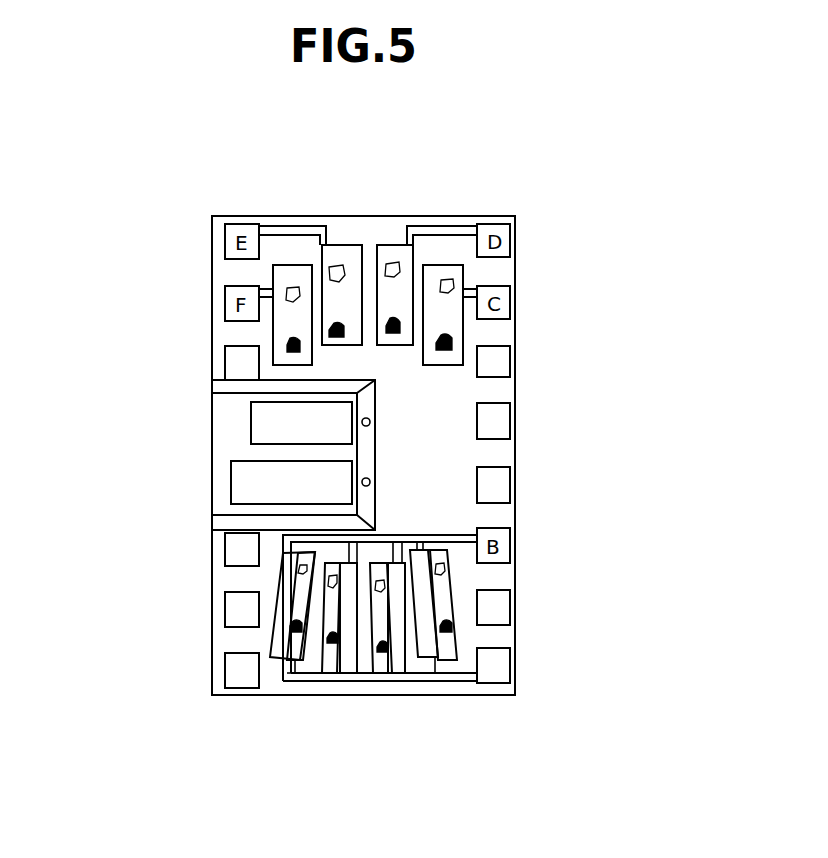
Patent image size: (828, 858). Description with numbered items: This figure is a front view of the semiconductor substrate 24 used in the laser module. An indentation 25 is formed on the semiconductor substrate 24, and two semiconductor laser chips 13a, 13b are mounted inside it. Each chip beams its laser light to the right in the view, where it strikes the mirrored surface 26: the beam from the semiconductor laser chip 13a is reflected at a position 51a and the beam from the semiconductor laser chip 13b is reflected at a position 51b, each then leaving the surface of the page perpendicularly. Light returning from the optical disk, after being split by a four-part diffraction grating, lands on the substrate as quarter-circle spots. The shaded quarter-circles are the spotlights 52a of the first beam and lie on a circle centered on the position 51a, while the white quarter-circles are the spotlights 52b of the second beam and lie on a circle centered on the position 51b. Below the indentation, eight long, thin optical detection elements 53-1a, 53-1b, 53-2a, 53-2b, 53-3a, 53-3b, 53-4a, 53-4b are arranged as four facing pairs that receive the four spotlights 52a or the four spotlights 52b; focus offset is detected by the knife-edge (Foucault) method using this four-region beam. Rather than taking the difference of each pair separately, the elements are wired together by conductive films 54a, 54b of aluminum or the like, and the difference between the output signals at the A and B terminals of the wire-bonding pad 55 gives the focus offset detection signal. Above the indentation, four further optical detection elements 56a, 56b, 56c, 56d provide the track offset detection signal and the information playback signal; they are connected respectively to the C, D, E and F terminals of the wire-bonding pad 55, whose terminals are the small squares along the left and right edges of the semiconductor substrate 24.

The semiconductor substrate 24 is at (212, 287).
The semiconductor laser chip 13a is at (232, 485).
The semiconductor laser chip 13b is at (251, 423).
The indentation 25 is at (228, 453).
The mirrored surface 26 is at (365, 402).
The position 51a is at (375, 477).
The position 51b is at (373, 420).
The spotlights 52a is at (393, 267).
The spotlights 52b is at (337, 268).
The optical detection element 53-1a is at (275, 637).
The optical detection element 53-1b is at (290, 660).
The optical detection element 53-2a is at (332, 677).
The optical detection element 53-2b is at (352, 677).
The optical detection element 53-3a is at (378, 677).
The optical detection element 53-3b is at (402, 677).
The optical detection element 53-4a is at (430, 657).
The optical detection element 53-4b is at (465, 653).
The conductive film 54a is at (395, 533).
The conductive film 54b is at (290, 683).
The wire-bonding pad 55 is at (505, 647).
The optical detection element 56a is at (290, 265).
The optical detection element 56b is at (338, 227).
The optical detection element 56c is at (433, 227).
The optical detection element 56d is at (463, 280).